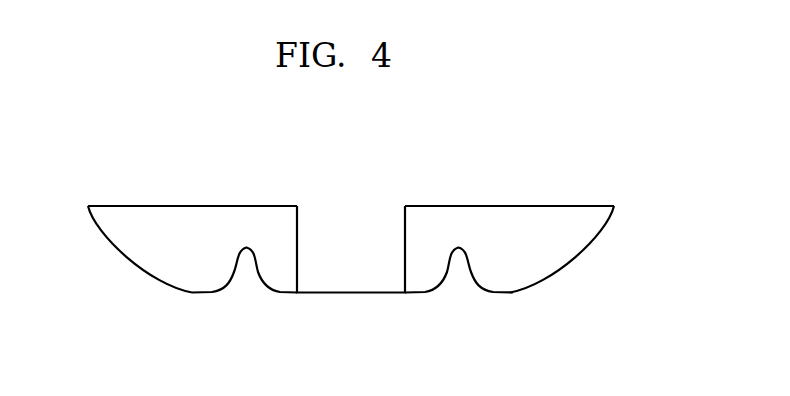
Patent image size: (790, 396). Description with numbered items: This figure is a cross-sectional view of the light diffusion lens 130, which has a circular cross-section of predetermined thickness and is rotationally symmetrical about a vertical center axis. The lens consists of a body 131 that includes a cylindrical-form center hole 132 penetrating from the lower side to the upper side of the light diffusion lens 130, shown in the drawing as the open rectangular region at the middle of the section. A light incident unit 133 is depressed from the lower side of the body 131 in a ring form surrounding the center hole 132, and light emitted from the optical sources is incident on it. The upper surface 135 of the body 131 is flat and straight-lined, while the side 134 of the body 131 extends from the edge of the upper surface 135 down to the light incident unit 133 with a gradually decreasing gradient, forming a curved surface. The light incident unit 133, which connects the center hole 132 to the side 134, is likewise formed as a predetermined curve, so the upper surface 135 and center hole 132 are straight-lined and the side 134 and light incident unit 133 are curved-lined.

The light diffusion lens 130 is at (337, 249).
The body 131 is at (585, 222).
The center hole 132 is at (371, 258).
The light incident unit 133 is at (248, 268).
The side 134 is at (570, 262).
The upper surface 135 is at (496, 206).